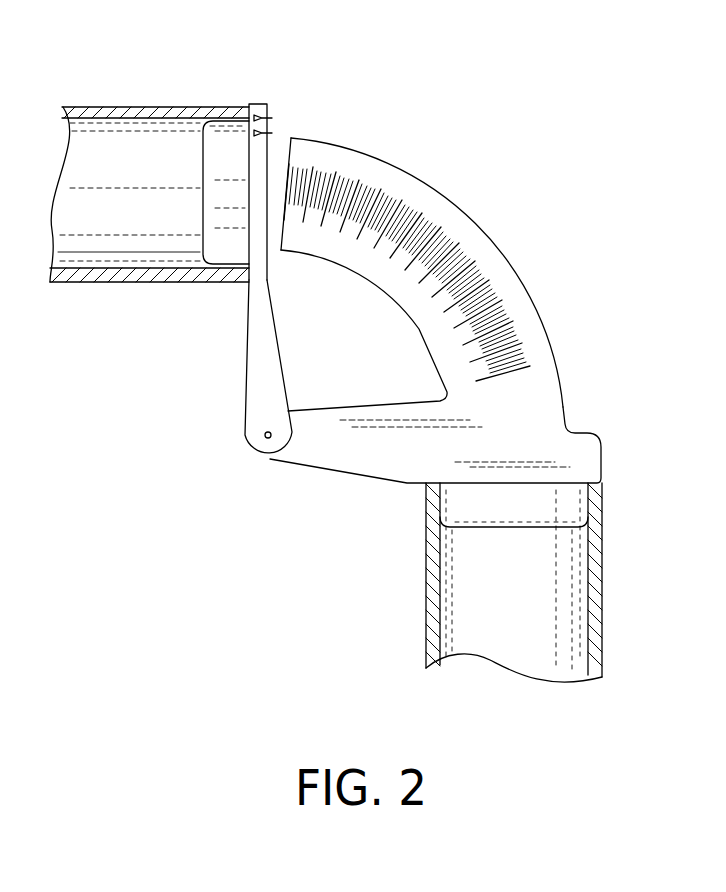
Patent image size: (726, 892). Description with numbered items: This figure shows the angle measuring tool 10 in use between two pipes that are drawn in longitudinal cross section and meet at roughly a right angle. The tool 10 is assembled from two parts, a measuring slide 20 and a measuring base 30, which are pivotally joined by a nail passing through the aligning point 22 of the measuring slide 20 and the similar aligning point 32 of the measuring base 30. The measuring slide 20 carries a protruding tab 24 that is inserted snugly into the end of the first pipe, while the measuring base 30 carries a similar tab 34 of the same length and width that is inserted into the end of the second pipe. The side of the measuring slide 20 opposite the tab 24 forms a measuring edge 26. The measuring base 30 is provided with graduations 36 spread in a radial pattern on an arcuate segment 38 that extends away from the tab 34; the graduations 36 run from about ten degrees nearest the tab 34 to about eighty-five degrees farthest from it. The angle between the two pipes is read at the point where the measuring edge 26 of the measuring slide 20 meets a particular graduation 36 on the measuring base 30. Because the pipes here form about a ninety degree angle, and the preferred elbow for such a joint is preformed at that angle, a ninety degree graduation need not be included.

The angle measuring tool 10 is at (388, 323).
The measuring slide 20 is at (268, 138).
The aligning point 22 is at (214, 392).
The tab 24 is at (235, 140).
The measuring edge 26 is at (305, 140).
The measuring base 30 is at (480, 212).
The aligning point 32 is at (265, 437).
The tab 34 is at (570, 498).
The graduations 36 is at (515, 318).
The arcuate segment 38 is at (535, 316).